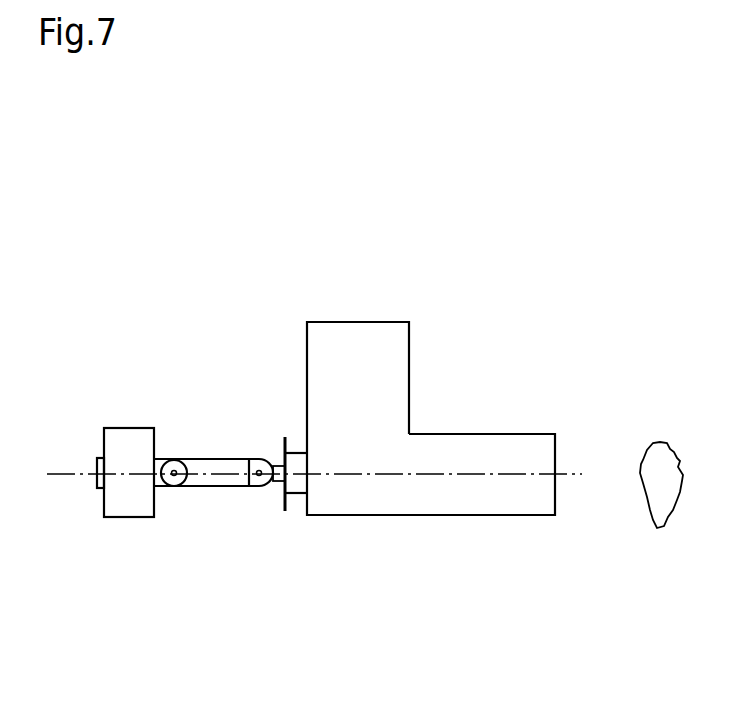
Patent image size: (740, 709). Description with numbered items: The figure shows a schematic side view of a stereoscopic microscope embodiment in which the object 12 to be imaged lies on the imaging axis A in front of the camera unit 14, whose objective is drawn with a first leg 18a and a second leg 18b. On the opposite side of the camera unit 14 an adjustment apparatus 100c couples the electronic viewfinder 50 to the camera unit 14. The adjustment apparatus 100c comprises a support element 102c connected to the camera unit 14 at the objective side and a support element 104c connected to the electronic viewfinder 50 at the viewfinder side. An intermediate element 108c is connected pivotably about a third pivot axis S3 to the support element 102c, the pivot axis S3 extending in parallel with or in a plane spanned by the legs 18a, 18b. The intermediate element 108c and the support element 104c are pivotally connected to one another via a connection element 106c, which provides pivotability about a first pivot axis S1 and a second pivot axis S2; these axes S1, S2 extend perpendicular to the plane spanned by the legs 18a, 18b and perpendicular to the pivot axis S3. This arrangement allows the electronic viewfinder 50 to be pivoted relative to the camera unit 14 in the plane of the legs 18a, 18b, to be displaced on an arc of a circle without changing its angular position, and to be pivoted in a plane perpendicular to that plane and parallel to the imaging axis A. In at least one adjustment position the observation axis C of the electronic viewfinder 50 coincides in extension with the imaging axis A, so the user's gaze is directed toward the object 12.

The observation axis C is at (62, 472).
The adjustment apparatus 100c is at (214, 594).
The electronic viewfinder 50 is at (122, 445).
The connection element 106c is at (205, 480).
The support element at the viewfinder side 104c is at (160, 488).
The second pivot axis S2 is at (174, 460).
The intermediate element 108c is at (273, 483).
The first pivot axis S1 is at (257, 470).
The third pivot axis S3 is at (285, 448).
The support element at the objective side 102c is at (298, 495).
The camera unit 14 is at (468, 383).
The second leg of the objective 18b is at (356, 353).
The first leg of the objective 18a is at (535, 453).
The imaging axis A is at (567, 477).
The object 12 is at (663, 515).